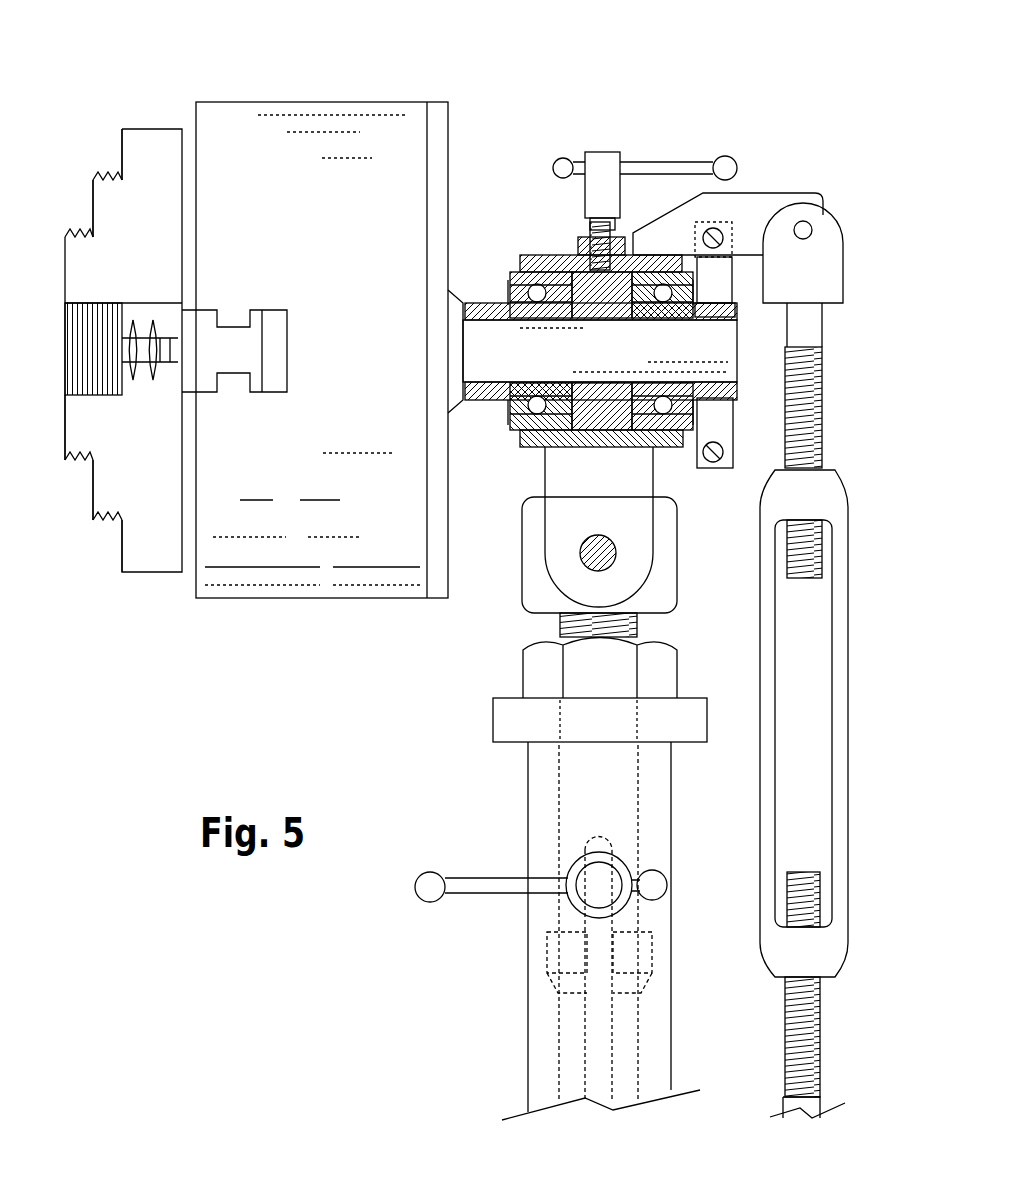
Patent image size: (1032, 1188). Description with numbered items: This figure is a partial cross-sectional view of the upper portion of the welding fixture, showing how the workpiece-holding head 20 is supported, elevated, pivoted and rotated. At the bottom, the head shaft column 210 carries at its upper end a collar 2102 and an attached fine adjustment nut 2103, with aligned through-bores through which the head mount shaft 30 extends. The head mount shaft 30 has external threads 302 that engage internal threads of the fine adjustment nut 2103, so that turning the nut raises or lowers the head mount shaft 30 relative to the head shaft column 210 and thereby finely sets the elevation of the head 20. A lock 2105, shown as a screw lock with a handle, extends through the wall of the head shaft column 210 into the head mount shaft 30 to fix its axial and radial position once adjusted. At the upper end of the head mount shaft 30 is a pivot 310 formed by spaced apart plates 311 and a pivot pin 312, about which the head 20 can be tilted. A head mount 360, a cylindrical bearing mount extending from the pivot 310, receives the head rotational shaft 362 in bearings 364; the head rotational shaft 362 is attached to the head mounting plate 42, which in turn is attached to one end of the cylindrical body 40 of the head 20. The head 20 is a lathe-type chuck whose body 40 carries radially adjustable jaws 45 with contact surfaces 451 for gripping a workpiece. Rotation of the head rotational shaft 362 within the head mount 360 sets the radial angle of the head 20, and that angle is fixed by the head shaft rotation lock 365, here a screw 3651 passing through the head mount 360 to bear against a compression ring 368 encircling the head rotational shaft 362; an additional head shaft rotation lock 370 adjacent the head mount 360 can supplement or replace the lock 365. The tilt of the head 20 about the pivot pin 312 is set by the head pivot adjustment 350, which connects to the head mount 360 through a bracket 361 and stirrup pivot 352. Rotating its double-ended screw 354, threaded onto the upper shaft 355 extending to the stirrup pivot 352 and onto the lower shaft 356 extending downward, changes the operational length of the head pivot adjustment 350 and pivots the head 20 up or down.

The head 20 is at (293, 93).
The head mounting plate 42 is at (440, 185).
The cylindrical body 40 is at (222, 600).
The jaws 45 is at (153, 157).
The contact surfaces 451 is at (78, 237).
The head rotational shaft 362 is at (500, 348).
The head mount 360 is at (515, 425).
The bearings 364 is at (537, 290).
The compression ring 368 is at (625, 397).
The screw 3651 is at (591, 240).
The head shaft rotation lock 365 is at (637, 143).
The bracket 361 is at (742, 212).
The head shaft rotation lock 370 is at (735, 285).
The stirrup pivot 352 is at (843, 212).
The upper shaft 355 is at (827, 407).
The head pivot adjustment 350 is at (853, 605).
The double-ended screw 354 is at (837, 810).
The lower shaft 356 is at (825, 1047).
The pivot 310 is at (515, 545).
The plates 311 is at (545, 598).
The pivot pin 312 is at (580, 555).
The external threads 302 is at (640, 623).
The fine adjustment nut 2103 is at (538, 678).
The collar 2102 is at (493, 720).
The head shaft column 210 is at (543, 1013).
The head mount shaft 30 is at (587, 812).
The lock 2105 is at (563, 865).